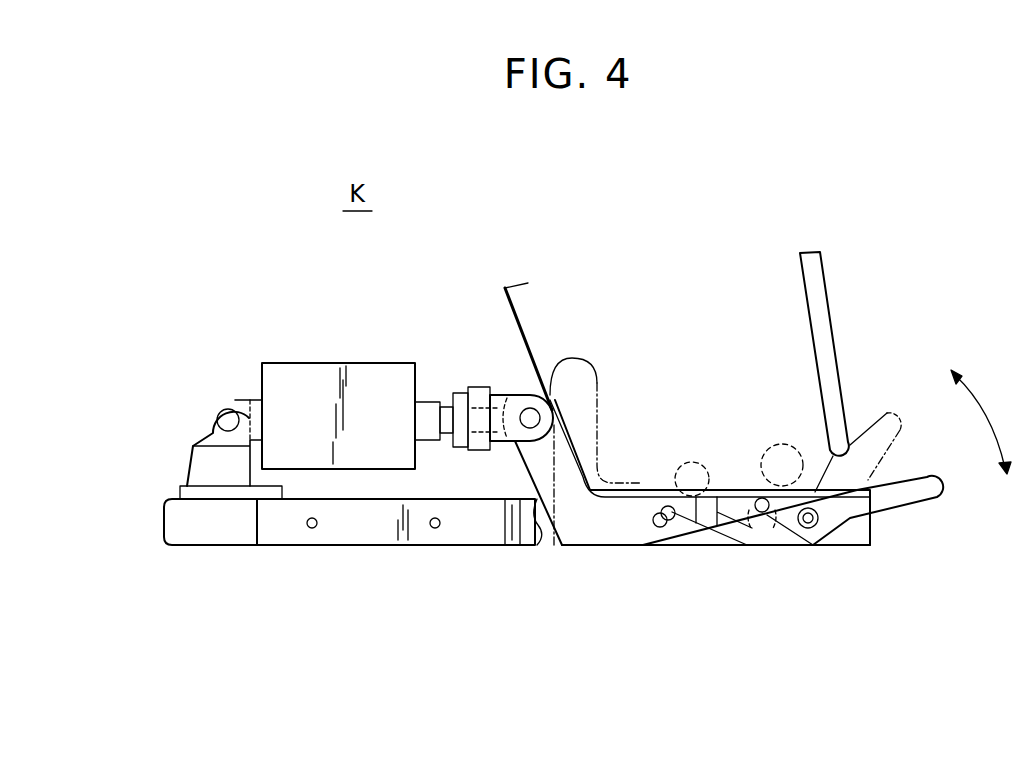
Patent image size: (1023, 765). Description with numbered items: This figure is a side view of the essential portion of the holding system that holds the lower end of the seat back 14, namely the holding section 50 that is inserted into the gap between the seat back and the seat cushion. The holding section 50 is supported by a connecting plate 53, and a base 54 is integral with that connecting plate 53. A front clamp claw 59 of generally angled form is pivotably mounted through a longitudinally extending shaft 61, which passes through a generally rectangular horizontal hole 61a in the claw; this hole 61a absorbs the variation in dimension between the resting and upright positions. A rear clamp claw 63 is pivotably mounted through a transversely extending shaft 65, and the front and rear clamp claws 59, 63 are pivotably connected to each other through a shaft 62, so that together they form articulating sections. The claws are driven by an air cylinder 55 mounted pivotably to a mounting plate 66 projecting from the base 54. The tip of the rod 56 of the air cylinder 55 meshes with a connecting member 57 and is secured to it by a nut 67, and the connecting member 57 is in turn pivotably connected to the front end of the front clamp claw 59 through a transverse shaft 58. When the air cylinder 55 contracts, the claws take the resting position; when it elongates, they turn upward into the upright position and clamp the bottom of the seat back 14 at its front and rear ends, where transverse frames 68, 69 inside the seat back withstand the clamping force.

The seat back 14 is at (530, 282).
The holding section 50 is at (548, 330).
The connecting plate 53 is at (363, 530).
The base 54 is at (196, 530).
The air cylinder 55 is at (328, 370).
The rod 56 is at (427, 400).
The connecting member 57 is at (507, 393).
The shaft 58 is at (535, 415).
The front clamp claw 59 is at (578, 530).
The shaft 61 is at (664, 527).
The hole 61a is at (710, 545).
The shaft 62 is at (760, 513).
The rear clamp claw 63 is at (912, 483).
The shaft 65 is at (816, 527).
The mounting plate 66 is at (208, 467).
The nut 67 is at (460, 390).
The frame 68 is at (682, 463).
The frame 69 is at (786, 445).